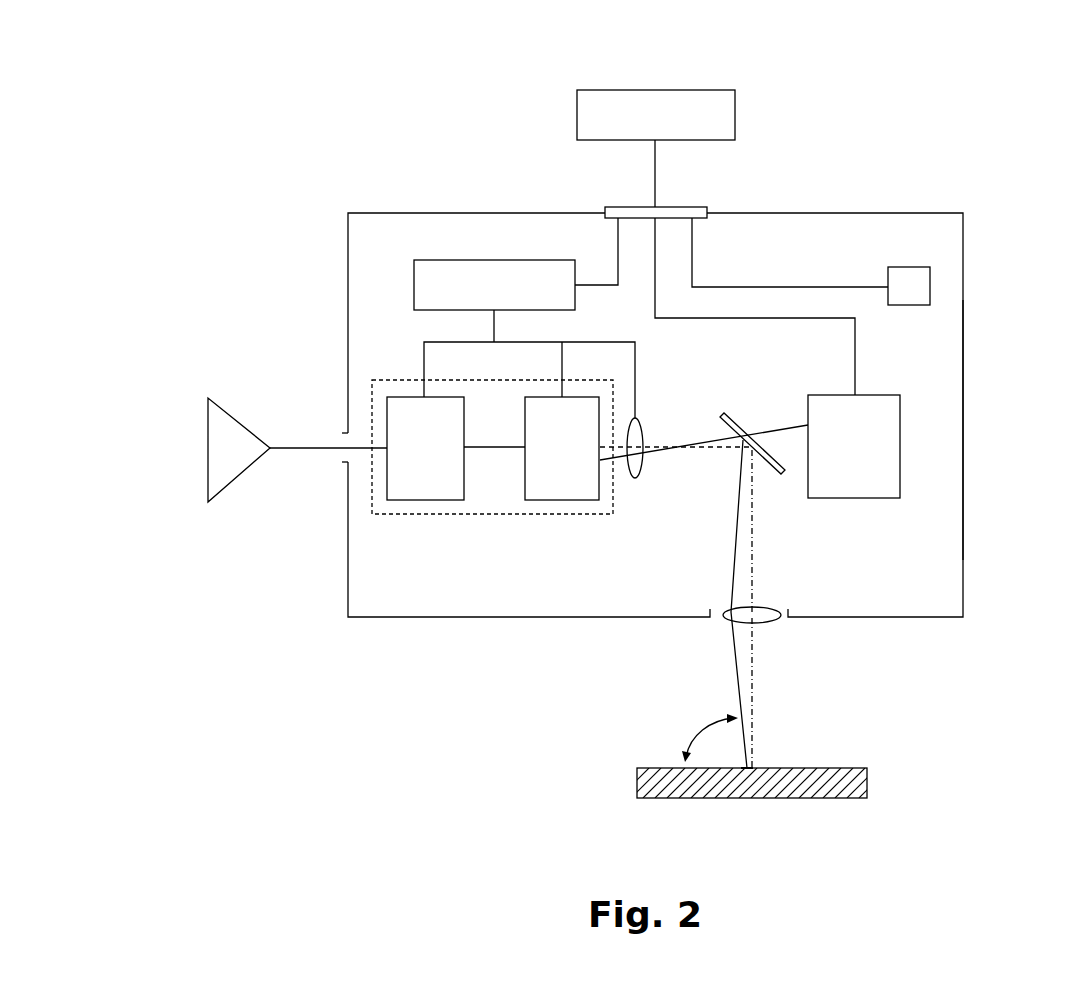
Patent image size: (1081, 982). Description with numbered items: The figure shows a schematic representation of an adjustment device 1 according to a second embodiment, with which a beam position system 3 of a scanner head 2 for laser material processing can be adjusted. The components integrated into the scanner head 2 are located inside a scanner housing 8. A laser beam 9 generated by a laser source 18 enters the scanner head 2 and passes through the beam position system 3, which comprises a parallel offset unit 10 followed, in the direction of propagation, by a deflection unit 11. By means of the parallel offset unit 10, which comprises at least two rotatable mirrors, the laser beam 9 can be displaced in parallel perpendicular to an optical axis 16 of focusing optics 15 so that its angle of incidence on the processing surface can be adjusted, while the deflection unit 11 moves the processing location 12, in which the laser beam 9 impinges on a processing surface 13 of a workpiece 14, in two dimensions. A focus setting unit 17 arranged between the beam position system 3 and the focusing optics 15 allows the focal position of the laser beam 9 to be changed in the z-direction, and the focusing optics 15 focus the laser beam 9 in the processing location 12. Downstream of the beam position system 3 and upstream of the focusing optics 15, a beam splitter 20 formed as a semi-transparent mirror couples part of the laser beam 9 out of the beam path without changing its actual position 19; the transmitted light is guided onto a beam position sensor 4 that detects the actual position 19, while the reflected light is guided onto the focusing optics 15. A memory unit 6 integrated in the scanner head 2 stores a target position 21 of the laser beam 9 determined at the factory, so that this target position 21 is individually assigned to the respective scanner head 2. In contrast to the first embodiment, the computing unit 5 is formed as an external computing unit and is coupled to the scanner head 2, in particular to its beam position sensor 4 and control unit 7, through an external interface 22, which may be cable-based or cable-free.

The adjustment device 1 is at (236, 144).
The scanner head 2 is at (492, 593).
The beam position system 3 is at (420, 514).
The beam position sensor 4 is at (844, 463).
The computing unit 5 is at (646, 129).
The memory unit 6 is at (903, 287).
The control unit 7 is at (484, 301).
The scanner housing 8 is at (963, 453).
The laser beam 9 is at (318, 448).
The parallel offset unit 10 is at (405, 464).
The deflection unit 11 is at (542, 464).
The processing location 12 is at (737, 772).
The processing surface 13 is at (800, 767).
The workpiece 14 is at (783, 782).
The focusing optics 15 is at (765, 625).
The optical axis 16 is at (753, 672).
The focus setting unit 17 is at (630, 434).
The laser source 18 is at (216, 465).
The actual position 19 is at (735, 532).
The beam splitter 20 is at (724, 418).
The target position 21 is at (752, 538).
The external interface 22 is at (683, 212).